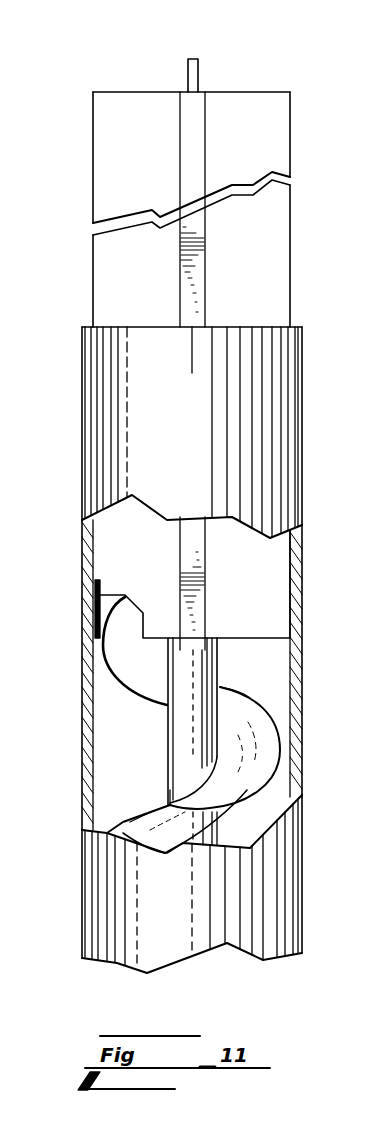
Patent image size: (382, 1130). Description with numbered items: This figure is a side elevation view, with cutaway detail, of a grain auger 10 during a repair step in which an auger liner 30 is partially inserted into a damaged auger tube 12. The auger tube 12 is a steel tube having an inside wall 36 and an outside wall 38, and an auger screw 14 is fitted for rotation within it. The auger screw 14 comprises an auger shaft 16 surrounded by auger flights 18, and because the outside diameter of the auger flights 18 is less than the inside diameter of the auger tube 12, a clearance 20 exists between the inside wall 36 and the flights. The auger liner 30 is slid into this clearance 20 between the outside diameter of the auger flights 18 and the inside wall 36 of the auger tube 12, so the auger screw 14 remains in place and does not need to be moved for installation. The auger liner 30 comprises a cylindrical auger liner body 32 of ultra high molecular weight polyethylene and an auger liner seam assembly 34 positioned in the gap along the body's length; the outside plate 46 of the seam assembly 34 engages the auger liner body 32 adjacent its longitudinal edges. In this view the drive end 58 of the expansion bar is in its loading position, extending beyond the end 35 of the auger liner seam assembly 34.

The grain auger 10 is at (303, 360).
The auger tube 12 is at (303, 425).
The auger screw 14 is at (219, 688).
The auger shaft 16 is at (220, 655).
The auger flights 18 is at (273, 780).
The clearance 20 is at (283, 740).
The auger liner 30 is at (262, 92).
The auger liner body 32 is at (291, 236).
The auger liner seam assembly 34 is at (205, 117).
The end of the auger liner seam assembly 35 is at (127, 92).
The inside wall 36 is at (95, 750).
The outside wall 38 is at (82, 717).
The outside plate 46 is at (192, 175).
The drive end 58 is at (190, 58).